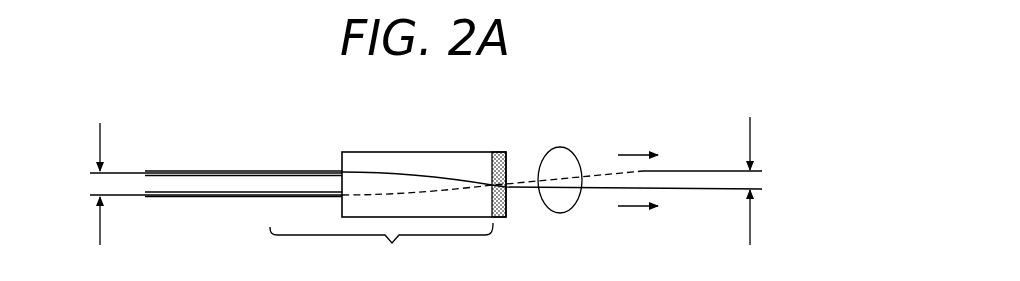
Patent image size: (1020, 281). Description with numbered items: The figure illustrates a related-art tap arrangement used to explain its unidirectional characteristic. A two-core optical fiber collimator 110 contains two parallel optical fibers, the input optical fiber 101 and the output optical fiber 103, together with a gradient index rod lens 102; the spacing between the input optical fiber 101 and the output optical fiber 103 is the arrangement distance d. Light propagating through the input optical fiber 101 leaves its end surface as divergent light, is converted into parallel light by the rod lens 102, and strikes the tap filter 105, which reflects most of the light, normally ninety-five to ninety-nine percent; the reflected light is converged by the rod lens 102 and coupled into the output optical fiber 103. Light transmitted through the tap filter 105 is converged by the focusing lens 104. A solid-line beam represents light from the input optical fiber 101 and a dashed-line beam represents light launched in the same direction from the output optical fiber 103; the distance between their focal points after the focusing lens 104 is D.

The input optical fiber 101 is at (243, 170).
The gradient index rod lens 102 is at (407, 152).
The output optical fiber 103 is at (240, 197).
The focusing lens 104 is at (563, 207).
The tap filter 105 is at (502, 152).
The two-core optical fiber collimator 110 is at (381, 250).
The arrangement distance d is at (86, 184).
The focal point distance D is at (769, 181).